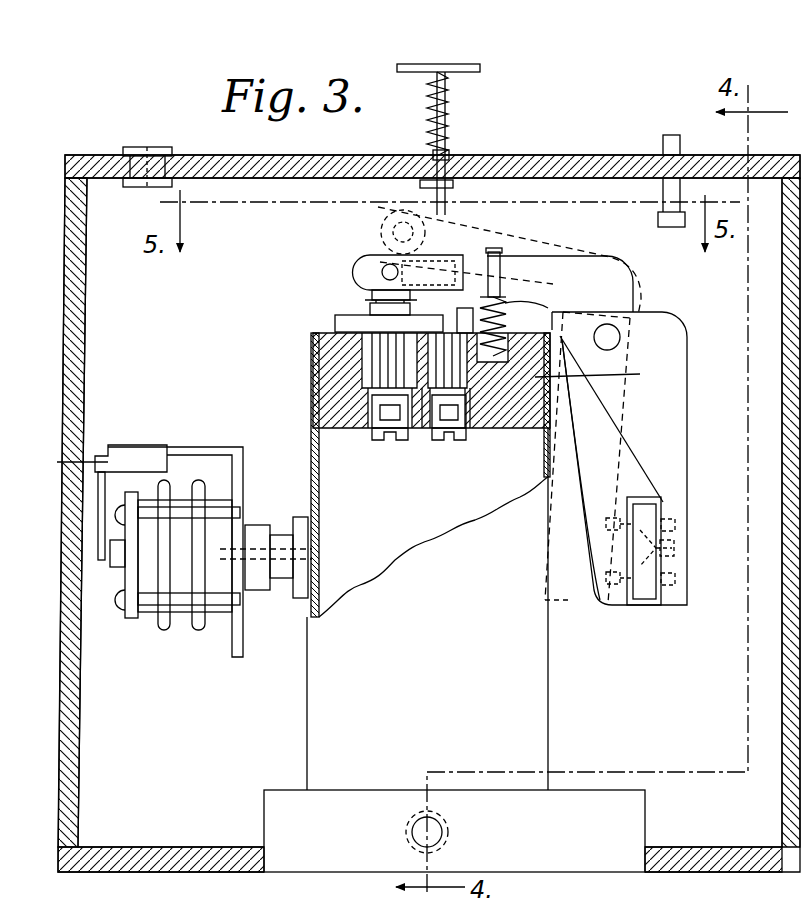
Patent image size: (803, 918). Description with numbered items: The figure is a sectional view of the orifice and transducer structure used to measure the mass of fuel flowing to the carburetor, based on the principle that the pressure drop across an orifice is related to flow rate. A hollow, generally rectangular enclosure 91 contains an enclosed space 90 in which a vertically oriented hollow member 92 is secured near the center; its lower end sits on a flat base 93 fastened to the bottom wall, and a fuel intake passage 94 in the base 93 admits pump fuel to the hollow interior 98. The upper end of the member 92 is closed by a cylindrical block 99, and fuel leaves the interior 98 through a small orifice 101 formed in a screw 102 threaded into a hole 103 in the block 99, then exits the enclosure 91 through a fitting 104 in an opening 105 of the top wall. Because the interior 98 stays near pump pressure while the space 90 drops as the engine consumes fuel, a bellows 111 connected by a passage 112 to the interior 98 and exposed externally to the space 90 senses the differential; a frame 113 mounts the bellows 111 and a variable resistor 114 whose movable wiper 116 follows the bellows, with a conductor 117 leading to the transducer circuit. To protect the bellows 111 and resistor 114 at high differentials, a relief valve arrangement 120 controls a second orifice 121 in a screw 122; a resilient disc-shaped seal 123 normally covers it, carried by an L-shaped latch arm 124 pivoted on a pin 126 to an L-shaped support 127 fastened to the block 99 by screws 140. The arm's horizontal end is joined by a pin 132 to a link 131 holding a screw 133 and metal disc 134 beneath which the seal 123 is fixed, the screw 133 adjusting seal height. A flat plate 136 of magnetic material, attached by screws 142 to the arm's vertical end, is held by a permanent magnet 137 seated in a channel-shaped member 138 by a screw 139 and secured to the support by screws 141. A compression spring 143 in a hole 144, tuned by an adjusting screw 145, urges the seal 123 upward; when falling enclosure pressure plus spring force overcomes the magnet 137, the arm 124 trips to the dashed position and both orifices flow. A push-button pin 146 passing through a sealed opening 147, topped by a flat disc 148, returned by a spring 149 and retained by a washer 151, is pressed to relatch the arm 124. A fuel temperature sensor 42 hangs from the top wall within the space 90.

The fuel temperature sensor 42 is at (683, 213).
The enclosed space 90 is at (178, 742).
The enclosure 91 is at (557, 163).
The hollow member 92 is at (550, 697).
The base 93 is at (605, 843).
The fuel intake passage 94 is at (443, 832).
The hollow interior 98 is at (388, 518).
The cylindrical block 99 is at (312, 362).
The orifice 101 is at (448, 432).
The screw 102 is at (462, 434).
The hole 103 is at (472, 430).
The fitting 104 is at (127, 148).
The opening 105 is at (160, 168).
The bellows 111 is at (180, 500).
The passage 112 is at (318, 552).
The frame 113 is at (228, 448).
The variable resistor 114 is at (144, 460).
The movable wiper 116 is at (100, 542).
The conductor 117 is at (84, 436).
The relief valve arrangement 120 is at (660, 295).
The second orifice 121 is at (374, 432).
The screw 122 is at (410, 432).
The resilient disc-shaped seal 123 is at (370, 309).
The L-shaped latch arm 124 is at (553, 258).
The pin 126 is at (621, 337).
The L-shaped support 127 is at (680, 423).
The link 131 is at (356, 278).
The pin 132 is at (385, 268).
The screw 133 is at (375, 297).
The metal disc 134 is at (422, 328).
The flat plate 136 is at (627, 607).
The permanent magnet 137 is at (648, 517).
The channel-shaped member 138 is at (655, 608).
The screw 139 is at (676, 550).
The screws 140 is at (525, 300).
The screws 141 is at (678, 524).
The screws 142 is at (612, 612).
The compression spring 143 is at (540, 310).
The hole 144 is at (607, 379).
The adjusting screw 145 is at (500, 249).
The pin 146 is at (447, 142).
The sealed opening 147 is at (432, 150).
The flat disc 148 is at (481, 68).
The spring 149 is at (428, 95).
The washer 151 is at (464, 161).